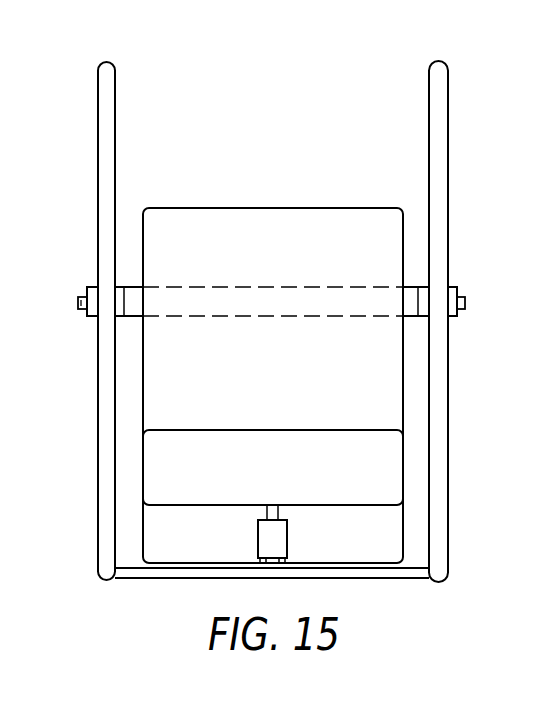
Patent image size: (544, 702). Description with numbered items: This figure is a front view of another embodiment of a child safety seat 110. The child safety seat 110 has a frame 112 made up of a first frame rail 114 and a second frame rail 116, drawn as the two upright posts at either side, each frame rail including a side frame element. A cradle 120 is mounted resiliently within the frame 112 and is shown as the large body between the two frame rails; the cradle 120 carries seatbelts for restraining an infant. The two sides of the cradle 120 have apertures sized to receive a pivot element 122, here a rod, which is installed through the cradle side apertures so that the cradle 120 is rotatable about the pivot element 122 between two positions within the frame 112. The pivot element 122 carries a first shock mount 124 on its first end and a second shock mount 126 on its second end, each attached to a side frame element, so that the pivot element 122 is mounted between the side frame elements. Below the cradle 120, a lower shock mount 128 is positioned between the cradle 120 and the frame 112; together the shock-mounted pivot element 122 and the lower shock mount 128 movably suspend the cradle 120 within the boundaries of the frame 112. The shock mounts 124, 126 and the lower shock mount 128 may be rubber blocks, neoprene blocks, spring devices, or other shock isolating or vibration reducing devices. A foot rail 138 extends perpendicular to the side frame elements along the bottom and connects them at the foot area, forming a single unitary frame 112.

The child safety seat 110 is at (313, 101).
The frame 112 is at (115, 73).
The first frame rail 114 is at (436, 78).
The second frame rail 116 is at (107, 128).
The cradle 120 is at (284, 208).
The pivot element 122 is at (132, 295).
The first shock mount 124 is at (93, 308).
The second shock mount 126 is at (448, 290).
The lower shock mount 128 is at (273, 539).
The foot rail 138 is at (198, 578).